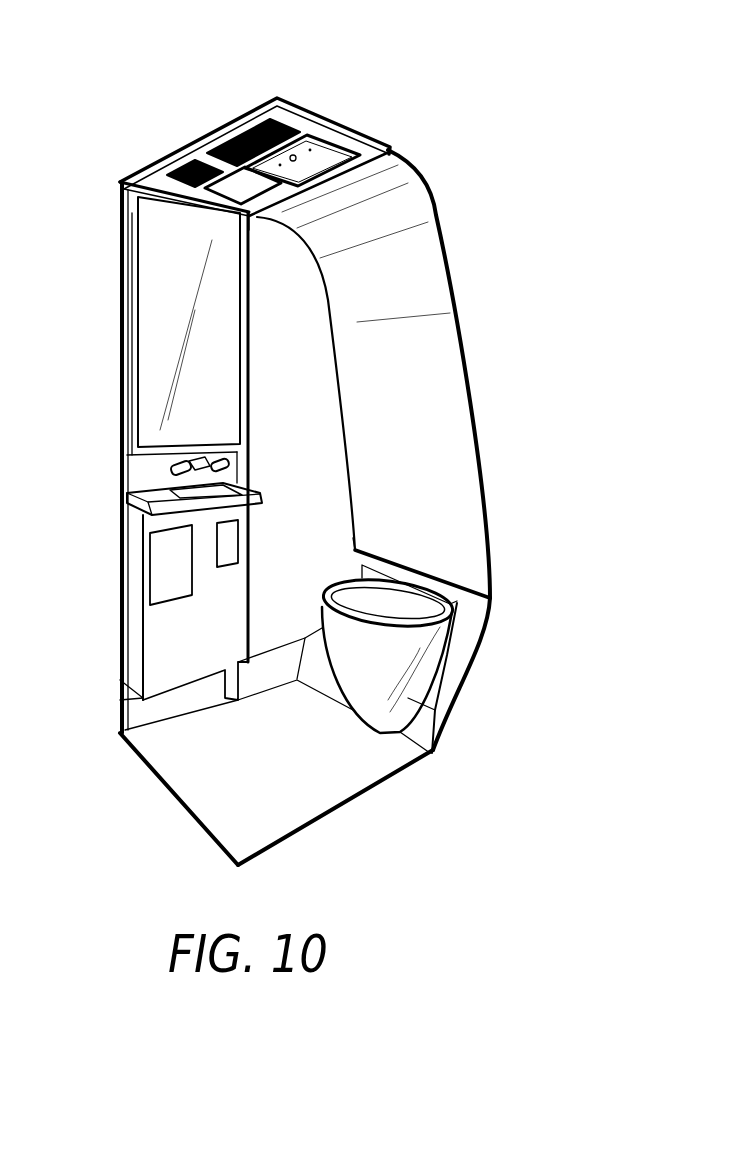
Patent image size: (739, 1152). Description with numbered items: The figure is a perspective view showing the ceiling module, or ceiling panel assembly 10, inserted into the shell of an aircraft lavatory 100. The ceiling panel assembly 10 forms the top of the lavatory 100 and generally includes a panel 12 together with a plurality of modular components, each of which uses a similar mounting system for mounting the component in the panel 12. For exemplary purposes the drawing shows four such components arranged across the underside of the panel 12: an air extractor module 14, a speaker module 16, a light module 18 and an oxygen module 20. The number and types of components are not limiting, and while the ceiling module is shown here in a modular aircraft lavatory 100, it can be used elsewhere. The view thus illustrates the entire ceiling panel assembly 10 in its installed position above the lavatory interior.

The ceiling panel assembly 10 is at (338, 437).
The lavatory 100 is at (518, 395).
The panel 12 is at (307, 128).
The air extractor module 14 is at (240, 137).
The speaker module 16 is at (173, 180).
The light module 18 is at (232, 188).
The oxygen module 20 is at (330, 160).